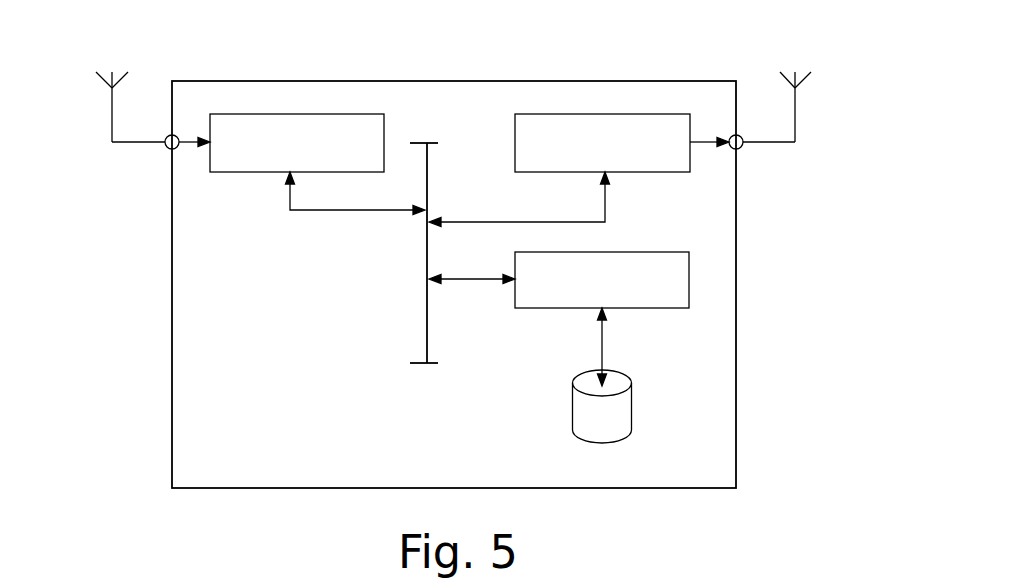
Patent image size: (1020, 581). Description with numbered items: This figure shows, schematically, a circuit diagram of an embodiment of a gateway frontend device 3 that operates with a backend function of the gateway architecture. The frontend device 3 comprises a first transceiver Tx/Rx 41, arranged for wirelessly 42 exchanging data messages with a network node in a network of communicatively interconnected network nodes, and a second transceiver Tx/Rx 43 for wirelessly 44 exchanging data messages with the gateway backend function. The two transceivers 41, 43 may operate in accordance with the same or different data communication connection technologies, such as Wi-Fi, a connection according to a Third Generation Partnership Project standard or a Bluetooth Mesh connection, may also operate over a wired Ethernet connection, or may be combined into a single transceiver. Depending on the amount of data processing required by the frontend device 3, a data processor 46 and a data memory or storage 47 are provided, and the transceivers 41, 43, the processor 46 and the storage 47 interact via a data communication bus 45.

The gateway frontend device 3 is at (703, 93).
The first transceiver 41 is at (260, 120).
The wireless connection to the network 42 is at (112, 123).
The second transceiver 43 is at (552, 120).
The wireless connection to the backend function 44 is at (795, 103).
The data communication bus 45 is at (427, 318).
The data processor 46 is at (682, 262).
The data storage 47 is at (625, 400).